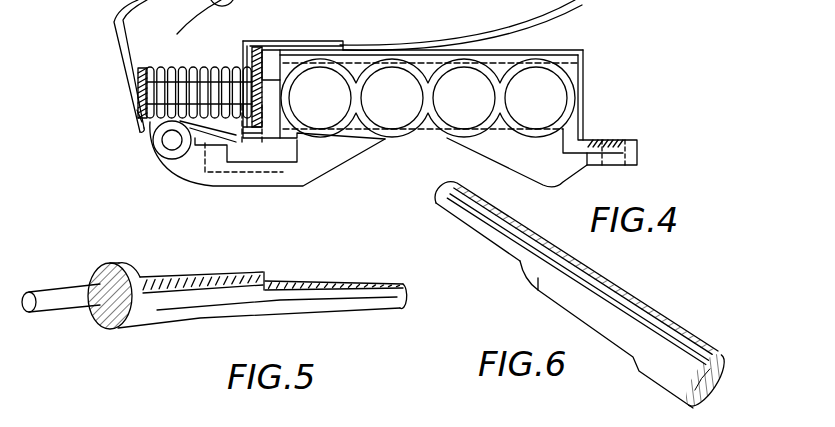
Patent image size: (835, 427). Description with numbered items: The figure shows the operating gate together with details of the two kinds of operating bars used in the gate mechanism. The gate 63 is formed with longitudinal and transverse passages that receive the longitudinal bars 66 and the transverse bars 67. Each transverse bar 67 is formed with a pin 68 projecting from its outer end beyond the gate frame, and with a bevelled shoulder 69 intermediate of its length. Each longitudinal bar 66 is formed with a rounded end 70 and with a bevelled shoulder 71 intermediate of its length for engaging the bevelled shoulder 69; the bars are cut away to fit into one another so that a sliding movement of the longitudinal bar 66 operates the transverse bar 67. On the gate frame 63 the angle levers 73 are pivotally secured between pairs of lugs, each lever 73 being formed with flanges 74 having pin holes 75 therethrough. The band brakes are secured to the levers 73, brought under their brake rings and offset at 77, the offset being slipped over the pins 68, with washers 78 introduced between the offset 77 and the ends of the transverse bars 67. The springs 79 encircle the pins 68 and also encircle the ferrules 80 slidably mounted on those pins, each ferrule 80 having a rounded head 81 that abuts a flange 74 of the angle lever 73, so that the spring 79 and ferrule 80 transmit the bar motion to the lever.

In FIG. 4, the gate 63 is at (584, 50).
In FIG. 6, the longitudinal bar 66 is at (595, 272).
In FIG. 4, the transverse bar 67 is at (267, 127).
In FIG. 5, the transverse bar 67 is at (167, 326).
In FIG. 4, the pin 68 is at (167, 118).
In FIG. 5, the pin 68 is at (53, 312).
In FIG. 5, the bevelled shoulder 69 is at (267, 273).
In FIG. 4, the rounded end 70 is at (460, 108).
In FIG. 6, the rounded end 70 is at (722, 375).
In FIG. 6, the bevelled shoulder 71 is at (527, 279).
In FIG. 4, the angle lever 73 is at (177, 68).
In FIG. 4, the flange 74 is at (119, 50).
In FIG. 4, the pin hole 75 is at (128, 92).
In FIG. 4, the offset 77 is at (253, 60).
In FIG. 4, the washer 78 is at (263, 56).
In FIG. 4, the spring 79 is at (213, 67).
In FIG. 4, the ferrule 80 is at (141, 132).
In FIG. 4, the rounded head 81 is at (137, 115).